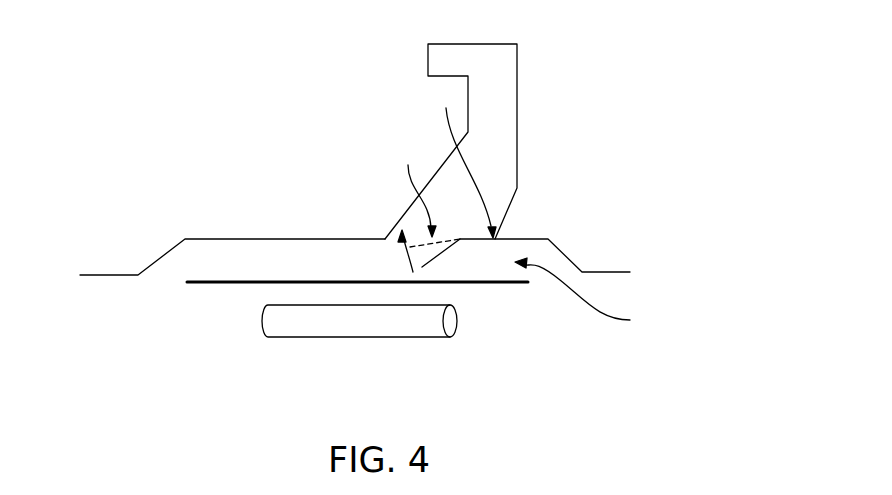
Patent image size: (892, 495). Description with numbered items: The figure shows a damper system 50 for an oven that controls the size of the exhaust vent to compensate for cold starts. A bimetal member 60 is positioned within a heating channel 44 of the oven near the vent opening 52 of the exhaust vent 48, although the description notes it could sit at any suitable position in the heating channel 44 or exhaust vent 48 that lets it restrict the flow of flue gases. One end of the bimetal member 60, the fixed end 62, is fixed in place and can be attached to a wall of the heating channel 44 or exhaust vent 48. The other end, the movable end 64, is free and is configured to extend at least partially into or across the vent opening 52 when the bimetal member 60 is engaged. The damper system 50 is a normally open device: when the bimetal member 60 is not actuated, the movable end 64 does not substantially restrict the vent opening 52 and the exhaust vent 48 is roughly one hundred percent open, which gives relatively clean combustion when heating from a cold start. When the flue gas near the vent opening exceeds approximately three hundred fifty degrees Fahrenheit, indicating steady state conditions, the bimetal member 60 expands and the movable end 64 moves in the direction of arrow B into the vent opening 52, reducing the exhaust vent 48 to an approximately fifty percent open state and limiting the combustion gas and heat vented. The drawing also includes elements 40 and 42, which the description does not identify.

The roller 40 is at (448, 320).
The anvil plate 42 is at (208, 284).
The heating channel 44 is at (207, 253).
The exhaust vent 48 is at (428, 60).
The damper system 50 is at (590, 296).
The vent opening 52 is at (414, 188).
The bimetal member 60 is at (463, 161).
The fixed end 62 is at (529, 239).
The movable end 64 is at (440, 250).
The arrow B is at (405, 253).